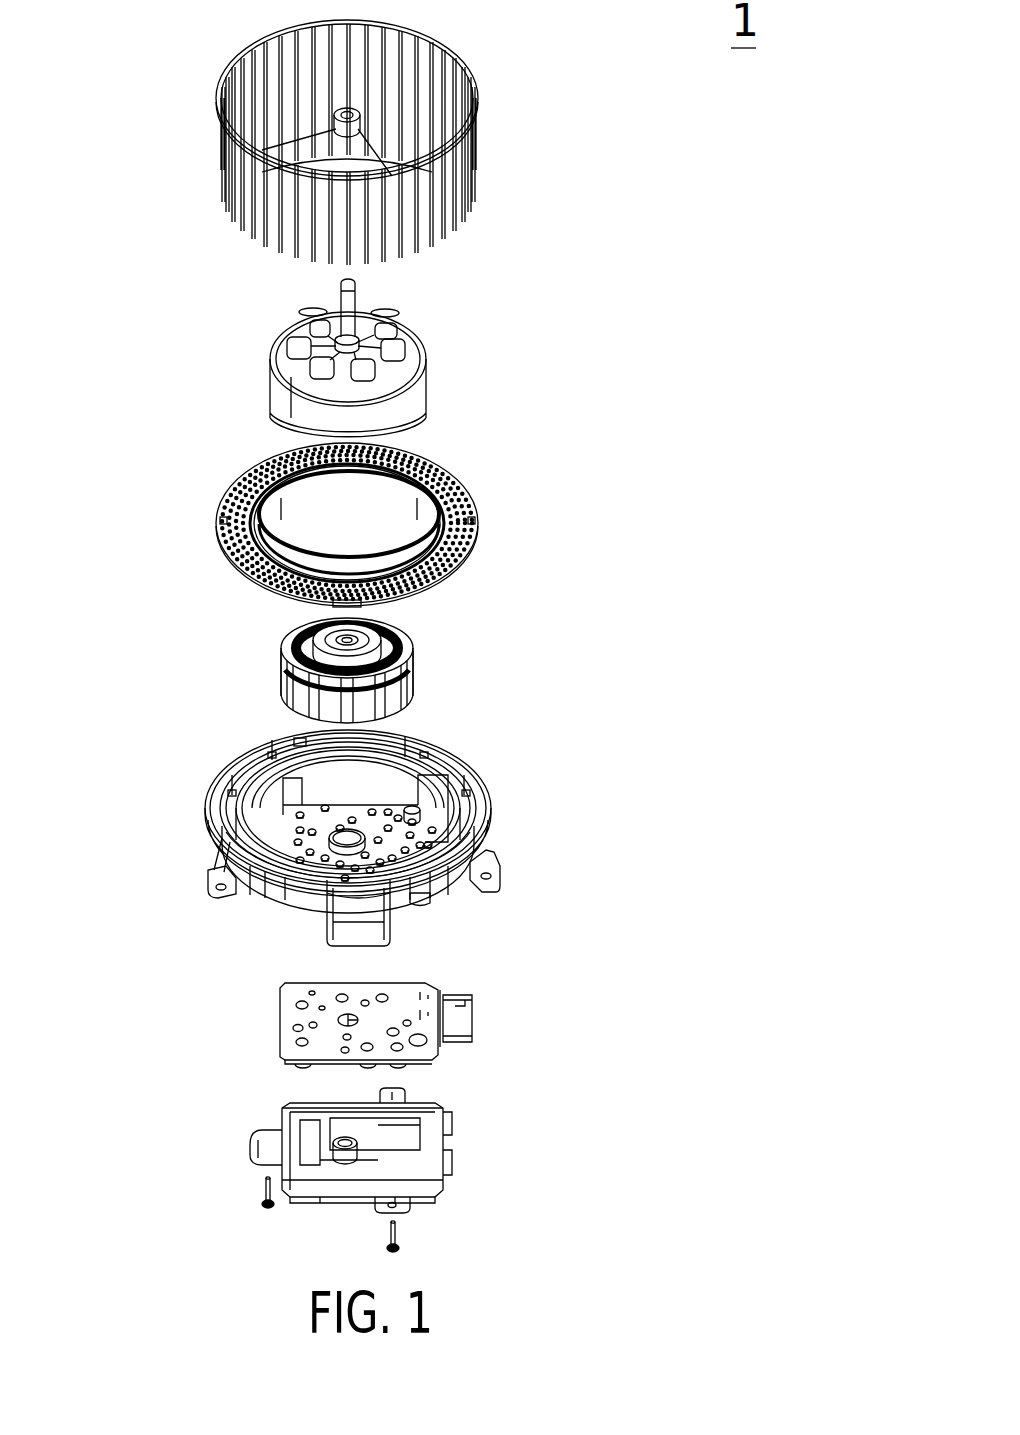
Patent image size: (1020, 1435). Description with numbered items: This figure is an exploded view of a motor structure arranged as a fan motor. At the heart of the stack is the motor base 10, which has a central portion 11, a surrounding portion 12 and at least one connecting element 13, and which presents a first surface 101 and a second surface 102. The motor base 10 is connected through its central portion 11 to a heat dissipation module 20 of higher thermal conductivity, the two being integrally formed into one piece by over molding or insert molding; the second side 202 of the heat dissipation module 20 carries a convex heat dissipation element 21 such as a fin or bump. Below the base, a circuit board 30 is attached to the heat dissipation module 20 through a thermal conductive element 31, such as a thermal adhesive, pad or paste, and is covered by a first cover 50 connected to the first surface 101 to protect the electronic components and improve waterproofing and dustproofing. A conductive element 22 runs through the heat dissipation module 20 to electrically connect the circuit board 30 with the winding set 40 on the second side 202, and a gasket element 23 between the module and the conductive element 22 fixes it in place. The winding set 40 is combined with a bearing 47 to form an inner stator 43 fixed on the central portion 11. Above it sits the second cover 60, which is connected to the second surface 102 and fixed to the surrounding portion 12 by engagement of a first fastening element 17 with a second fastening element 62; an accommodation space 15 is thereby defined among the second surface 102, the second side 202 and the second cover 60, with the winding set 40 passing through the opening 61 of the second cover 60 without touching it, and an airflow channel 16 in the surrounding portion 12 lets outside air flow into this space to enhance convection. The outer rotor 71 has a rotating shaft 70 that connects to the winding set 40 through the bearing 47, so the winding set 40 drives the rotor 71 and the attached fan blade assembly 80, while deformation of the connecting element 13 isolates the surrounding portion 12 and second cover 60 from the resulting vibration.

The motor base 10 is at (362, 830).
The first surface 101 is at (435, 900).
The second surface 102 is at (480, 793).
The central portion 11 is at (232, 793).
The surrounding portion 12 is at (232, 822).
The connecting element 13 is at (420, 903).
The accommodation space 15 is at (300, 745).
The airflow channel 16 is at (350, 915).
The first fastening element 17 is at (483, 846).
The heat dissipation module 20 is at (382, 790).
The second side 202 is at (262, 777).
The heat dissipation element 21 is at (440, 773).
The conductive element 22 is at (226, 855).
The gasket element 23 is at (255, 887).
The circuit board 30 is at (390, 1025).
The thermal conductive element 31 is at (315, 1025).
The winding set 40 is at (333, 666).
The stator 43 is at (265, 666).
The bearing 47 is at (300, 634).
The first cover 50 is at (432, 1170).
The second cover 60 is at (411, 518).
The opening 61 is at (355, 512).
The second fastening element 62 is at (432, 590).
The rotating shaft 70 is at (350, 305).
The rotor 71 is at (430, 390).
The fan blade assembly 80 is at (487, 106).